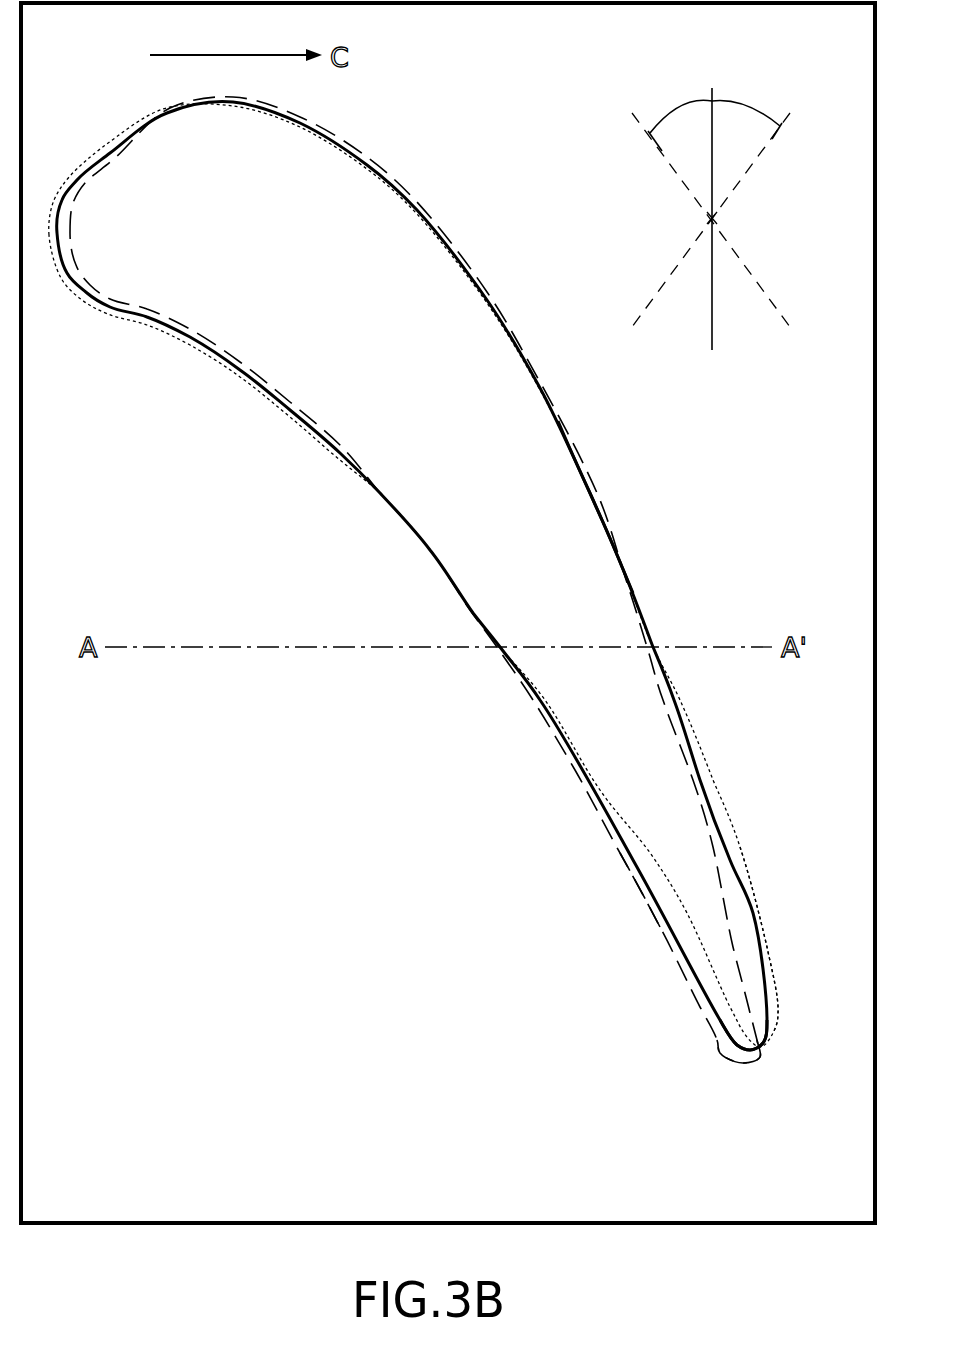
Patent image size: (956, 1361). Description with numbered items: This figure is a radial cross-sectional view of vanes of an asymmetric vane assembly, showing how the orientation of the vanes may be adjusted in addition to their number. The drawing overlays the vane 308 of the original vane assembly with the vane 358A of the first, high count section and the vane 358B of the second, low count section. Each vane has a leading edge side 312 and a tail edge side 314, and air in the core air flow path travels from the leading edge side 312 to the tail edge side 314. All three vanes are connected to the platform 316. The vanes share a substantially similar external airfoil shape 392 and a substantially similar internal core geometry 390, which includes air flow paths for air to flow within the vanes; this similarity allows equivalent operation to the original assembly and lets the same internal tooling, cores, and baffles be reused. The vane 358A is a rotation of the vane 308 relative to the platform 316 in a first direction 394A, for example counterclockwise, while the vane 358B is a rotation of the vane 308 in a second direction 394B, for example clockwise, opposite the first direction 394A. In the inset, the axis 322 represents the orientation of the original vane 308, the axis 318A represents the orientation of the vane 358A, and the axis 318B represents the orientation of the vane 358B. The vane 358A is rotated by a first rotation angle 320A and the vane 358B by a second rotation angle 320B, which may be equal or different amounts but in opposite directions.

The vane 308 is at (760, 1047).
The leading edge side 312 is at (65, 126).
The tail edge side 314 is at (723, 1102).
The platform 316 is at (803, 1223).
The axis 318A is at (660, 153).
The axis 318B is at (775, 133).
The first rotation angle 320A is at (680, 117).
The second rotation angle 320B is at (750, 108).
The axis 322 is at (712, 92).
The vane 358A is at (773, 998).
The vane 358B is at (707, 1022).
The internal core geometry 390 is at (588, 578).
The external airfoil shape 392 is at (593, 493).
The first direction 394A is at (415, 580).
The second direction 394B is at (538, 887).